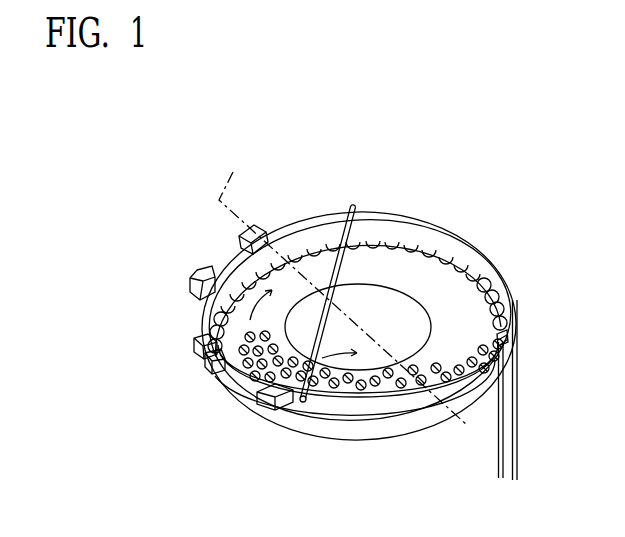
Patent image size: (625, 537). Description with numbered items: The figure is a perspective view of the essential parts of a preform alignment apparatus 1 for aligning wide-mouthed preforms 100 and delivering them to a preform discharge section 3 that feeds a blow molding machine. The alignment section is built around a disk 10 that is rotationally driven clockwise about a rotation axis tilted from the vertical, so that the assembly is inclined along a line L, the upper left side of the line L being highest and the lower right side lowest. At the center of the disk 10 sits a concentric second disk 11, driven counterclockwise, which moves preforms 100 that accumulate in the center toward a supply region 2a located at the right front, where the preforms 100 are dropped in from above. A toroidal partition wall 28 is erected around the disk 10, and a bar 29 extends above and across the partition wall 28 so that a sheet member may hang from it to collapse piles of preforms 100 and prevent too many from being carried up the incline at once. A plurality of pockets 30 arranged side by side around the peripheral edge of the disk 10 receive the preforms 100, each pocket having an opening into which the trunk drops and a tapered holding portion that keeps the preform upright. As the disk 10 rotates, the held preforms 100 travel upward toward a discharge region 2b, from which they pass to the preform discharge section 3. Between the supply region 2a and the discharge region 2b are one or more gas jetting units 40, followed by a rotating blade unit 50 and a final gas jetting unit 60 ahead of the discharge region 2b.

The preform alignment apparatus 1 is at (497, 150).
The disk 10 is at (452, 350).
The second disk 11 is at (393, 298).
The partition wall 28 is at (502, 267).
The bar 29 is at (350, 207).
The pockets 30 is at (315, 250).
The supply region 2a is at (416, 370).
The discharge region 2b is at (513, 338).
The preform discharge section 3 is at (520, 455).
The gas jetting units 40 is at (199, 357).
The rotating blade unit 50 is at (198, 277).
The final gas jetting unit 60 is at (238, 240).
The preforms 100 is at (228, 396).
The line L is at (343, 291).